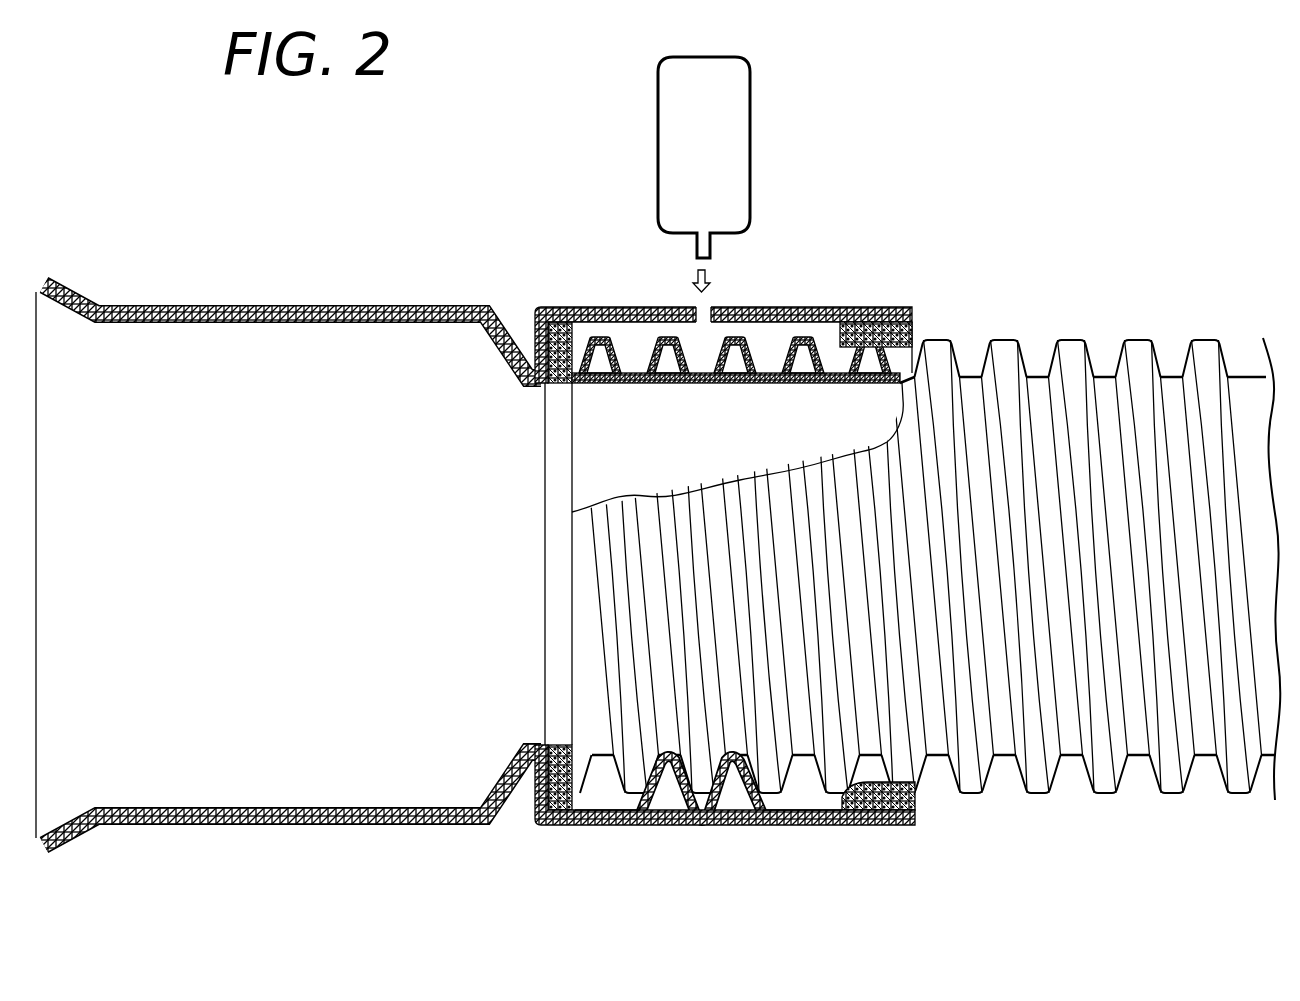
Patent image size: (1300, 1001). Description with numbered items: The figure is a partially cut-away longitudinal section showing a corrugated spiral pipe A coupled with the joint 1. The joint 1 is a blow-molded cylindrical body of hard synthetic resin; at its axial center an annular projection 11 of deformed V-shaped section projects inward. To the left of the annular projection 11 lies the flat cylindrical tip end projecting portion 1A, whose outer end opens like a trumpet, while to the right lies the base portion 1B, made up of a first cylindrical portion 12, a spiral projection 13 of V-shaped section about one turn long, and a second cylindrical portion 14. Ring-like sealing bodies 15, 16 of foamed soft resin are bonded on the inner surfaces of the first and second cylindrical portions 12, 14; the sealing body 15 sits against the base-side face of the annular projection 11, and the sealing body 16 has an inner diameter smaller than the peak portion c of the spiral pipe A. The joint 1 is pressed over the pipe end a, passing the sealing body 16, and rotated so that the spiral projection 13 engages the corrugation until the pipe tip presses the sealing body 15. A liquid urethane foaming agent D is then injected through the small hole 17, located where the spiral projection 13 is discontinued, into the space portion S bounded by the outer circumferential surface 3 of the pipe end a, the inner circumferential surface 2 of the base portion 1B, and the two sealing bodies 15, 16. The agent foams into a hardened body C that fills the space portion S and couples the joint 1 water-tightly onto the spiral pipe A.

The joint 1 is at (342, 290).
The tip end projecting portion 1A is at (225, 836).
The base portion 1B is at (552, 838).
The annular projection 11 is at (522, 348).
The first cylindrical portion 12 is at (596, 307).
The spiral projection 13 is at (670, 830).
The second cylindrical portion 14 is at (812, 307).
The sealing body 15 is at (548, 307).
The sealing body 16 is at (880, 307).
The small hole 17 is at (700, 307).
The inner circumferential surface 2 is at (835, 828).
The outer circumferential surface 3 is at (630, 340).
The spiral pipe A is at (1082, 298).
The foaming agent D is at (742, 148).
The pipe end a is at (622, 598).
The peak portion c is at (1003, 340).
The urethane foamed and hardened body C is at (795, 828).
The space portion S is at (605, 828).